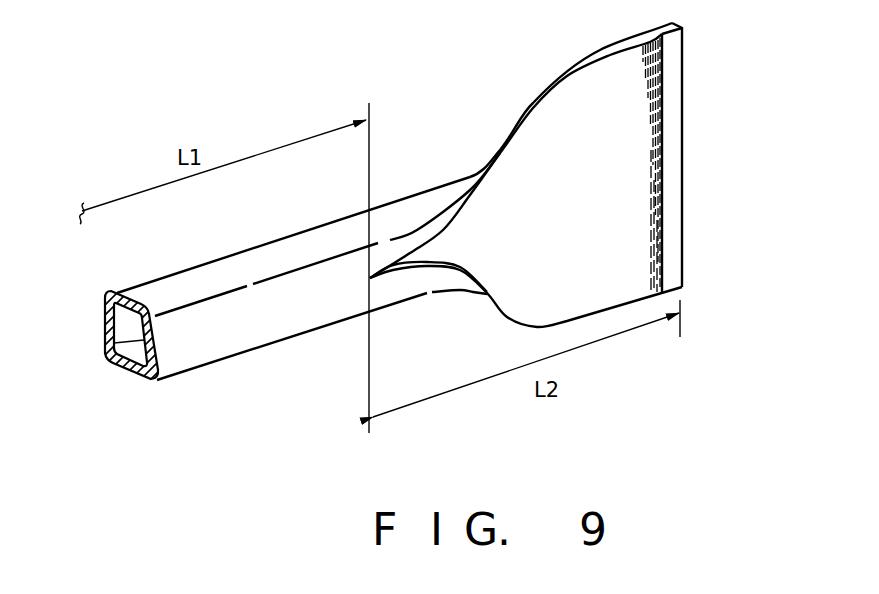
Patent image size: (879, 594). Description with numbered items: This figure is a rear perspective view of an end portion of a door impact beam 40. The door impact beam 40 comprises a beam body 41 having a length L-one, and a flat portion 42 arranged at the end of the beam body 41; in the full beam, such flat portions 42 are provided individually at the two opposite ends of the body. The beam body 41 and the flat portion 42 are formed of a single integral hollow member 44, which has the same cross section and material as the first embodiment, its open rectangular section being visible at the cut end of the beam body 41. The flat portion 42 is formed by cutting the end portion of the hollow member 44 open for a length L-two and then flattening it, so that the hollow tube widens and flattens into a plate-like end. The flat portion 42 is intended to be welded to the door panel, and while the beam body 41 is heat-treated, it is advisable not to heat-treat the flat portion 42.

The door impact beam 40 is at (400, 180).
The beam body 41 is at (332, 221).
The flat portion 42 is at (660, 213).
The hollow member 44 is at (125, 377).